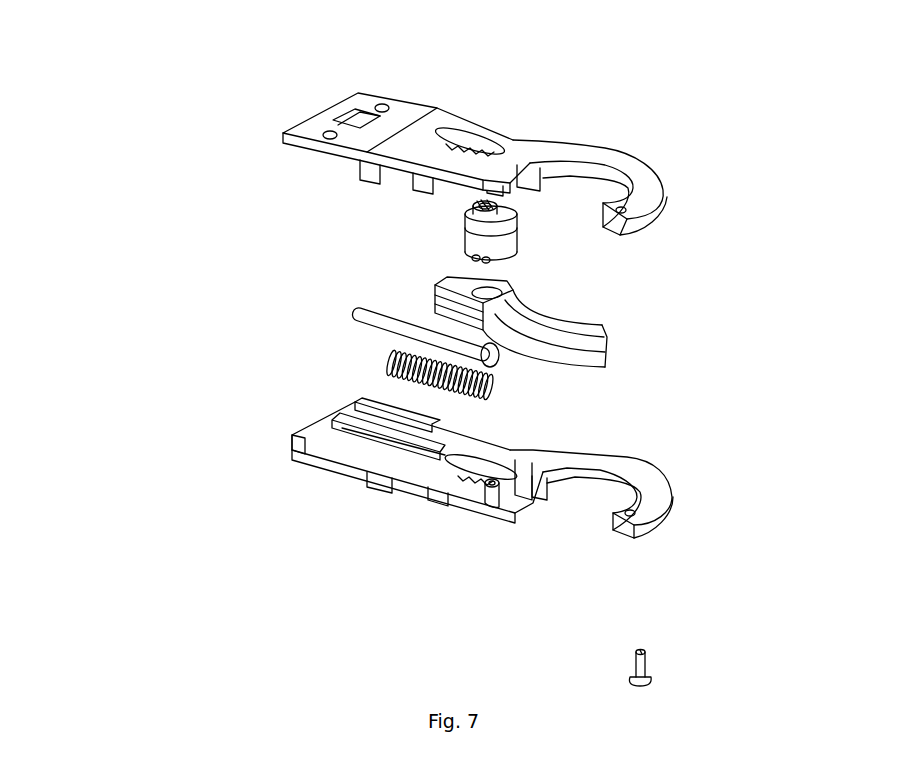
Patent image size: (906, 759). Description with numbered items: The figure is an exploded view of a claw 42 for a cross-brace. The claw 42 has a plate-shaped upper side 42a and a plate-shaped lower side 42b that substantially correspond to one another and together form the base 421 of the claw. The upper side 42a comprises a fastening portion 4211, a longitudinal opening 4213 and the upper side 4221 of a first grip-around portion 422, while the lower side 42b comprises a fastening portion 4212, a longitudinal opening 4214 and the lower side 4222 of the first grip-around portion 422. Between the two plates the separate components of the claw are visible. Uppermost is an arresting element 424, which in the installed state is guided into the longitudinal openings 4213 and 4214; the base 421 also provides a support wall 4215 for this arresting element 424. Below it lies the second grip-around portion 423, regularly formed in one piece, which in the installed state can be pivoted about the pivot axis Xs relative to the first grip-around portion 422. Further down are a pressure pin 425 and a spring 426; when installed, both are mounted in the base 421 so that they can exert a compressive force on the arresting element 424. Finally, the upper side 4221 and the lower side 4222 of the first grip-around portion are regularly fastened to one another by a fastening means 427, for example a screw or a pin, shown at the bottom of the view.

The claw 42 is at (147, 91).
The upper side 42a is at (443, 103).
The lower side 42b is at (462, 510).
The base 421 is at (246, 133).
The fastening portion 4211 is at (316, 115).
The fastening portion 4212 is at (297, 460).
The longitudinal opening 4213 is at (481, 142).
The longitudinal opening 4214 is at (465, 476).
The support wall 4215 is at (463, 447).
The first grip-around portion 422 is at (683, 213).
The upper side of first grip-around portion 4221 is at (662, 178).
The lower side of first grip-around portion 4222 is at (657, 515).
The second grip-around portion 423 is at (555, 327).
The arresting element 424 is at (465, 240).
The pressure pin 425 is at (347, 315).
The spring 426 is at (495, 385).
The fastening means 427 is at (650, 663).
The pivot axis Xs is at (483, 188).